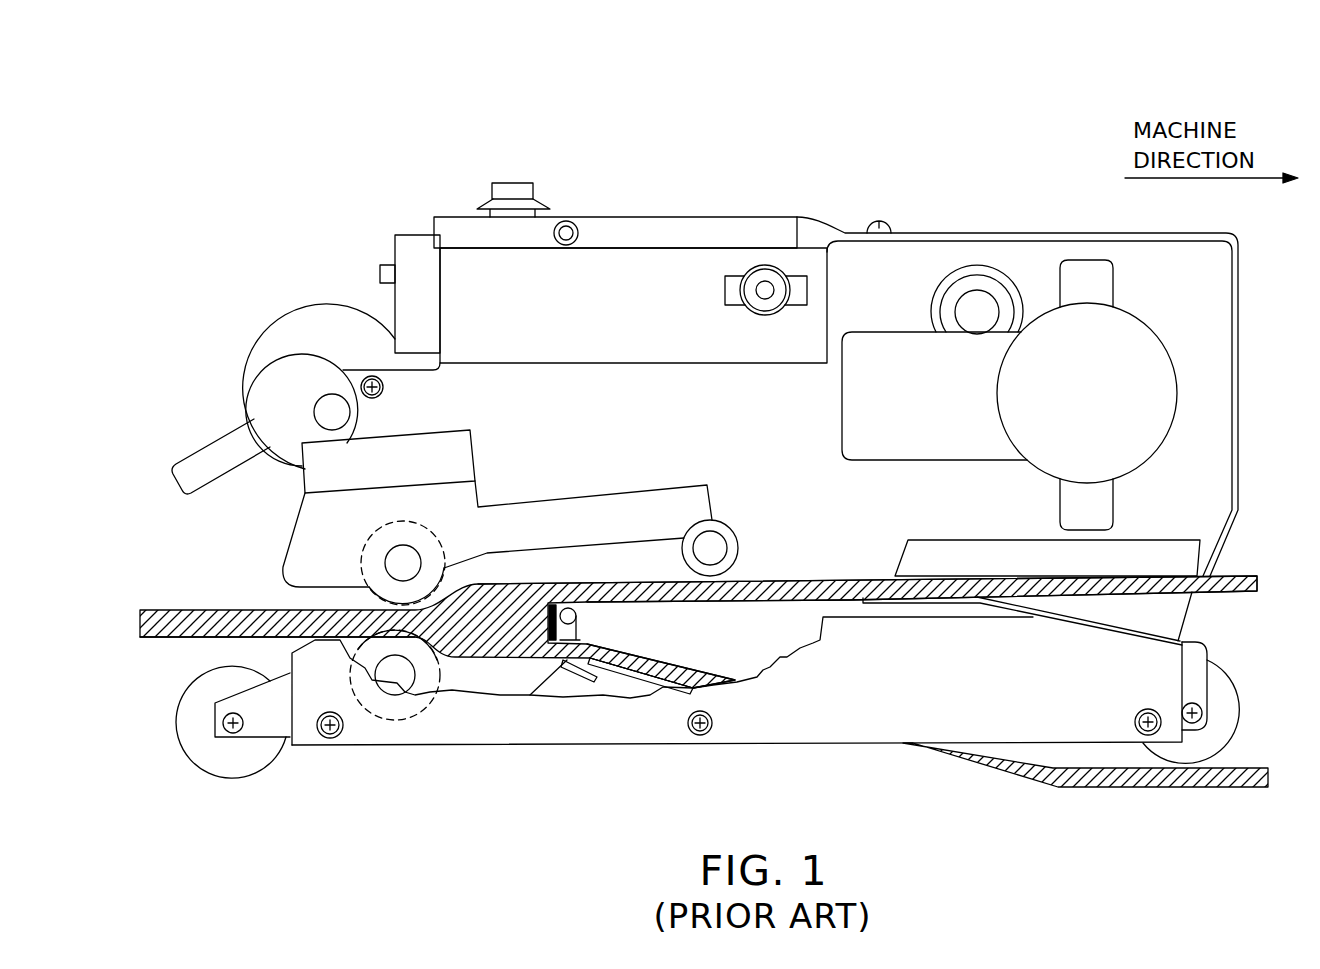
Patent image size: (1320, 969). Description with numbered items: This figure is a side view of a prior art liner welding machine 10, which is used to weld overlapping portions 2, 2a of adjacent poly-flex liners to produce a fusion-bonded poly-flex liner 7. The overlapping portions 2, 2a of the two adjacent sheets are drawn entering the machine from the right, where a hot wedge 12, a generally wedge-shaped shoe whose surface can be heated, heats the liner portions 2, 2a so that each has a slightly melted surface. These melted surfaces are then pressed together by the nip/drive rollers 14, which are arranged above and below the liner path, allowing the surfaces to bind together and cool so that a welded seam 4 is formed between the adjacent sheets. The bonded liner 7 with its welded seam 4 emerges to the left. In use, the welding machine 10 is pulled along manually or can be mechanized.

The welding machine 10 is at (929, 160).
The overlapping portion of liner 2 is at (1247, 577).
The overlapping portion of liner 2a is at (1208, 787).
The fusion-bonded poly-flex liner 7 is at (140, 625).
The welded seam 4 is at (157, 637).
The rollers 14 is at (382, 594).
The hot wedge 12 is at (502, 660).